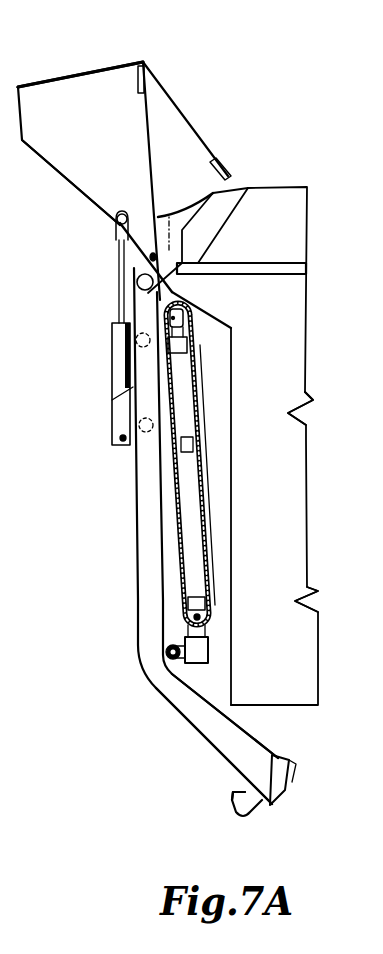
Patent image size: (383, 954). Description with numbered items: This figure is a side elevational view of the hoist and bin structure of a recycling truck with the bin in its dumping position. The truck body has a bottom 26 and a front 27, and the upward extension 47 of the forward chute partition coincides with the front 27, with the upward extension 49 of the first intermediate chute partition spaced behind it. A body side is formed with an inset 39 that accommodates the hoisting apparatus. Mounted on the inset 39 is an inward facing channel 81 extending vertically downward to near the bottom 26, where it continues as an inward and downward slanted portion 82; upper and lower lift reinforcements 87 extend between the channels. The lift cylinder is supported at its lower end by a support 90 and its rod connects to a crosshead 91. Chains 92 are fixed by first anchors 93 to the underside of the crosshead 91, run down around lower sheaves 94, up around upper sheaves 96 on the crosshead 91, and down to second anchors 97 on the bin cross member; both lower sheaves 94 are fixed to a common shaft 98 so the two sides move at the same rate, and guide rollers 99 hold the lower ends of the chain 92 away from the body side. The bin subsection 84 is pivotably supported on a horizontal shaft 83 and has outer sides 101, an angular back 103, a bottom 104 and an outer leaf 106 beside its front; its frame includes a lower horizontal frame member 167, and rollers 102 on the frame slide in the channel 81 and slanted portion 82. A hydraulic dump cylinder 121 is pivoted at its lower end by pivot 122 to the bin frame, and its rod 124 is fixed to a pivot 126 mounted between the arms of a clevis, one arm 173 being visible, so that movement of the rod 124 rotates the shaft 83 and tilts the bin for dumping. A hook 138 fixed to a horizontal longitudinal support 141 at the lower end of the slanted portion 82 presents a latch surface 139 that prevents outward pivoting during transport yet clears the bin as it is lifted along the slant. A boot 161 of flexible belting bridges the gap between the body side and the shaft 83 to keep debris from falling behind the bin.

The bottom 26 is at (257, 705).
The front 27 is at (295, 597).
The inset 39 is at (288, 411).
The upward extension 47 is at (287, 203).
The upward extension 49 is at (230, 203).
The inward facing channel 81 is at (143, 540).
The inward/downward slanted portion 82 is at (197, 727).
The horizontal shaft 83 is at (137, 287).
The bin subsection 84 is at (59, 70).
The longitudinal lift reinforcement 87 is at (210, 653).
The support 90 is at (195, 597).
The crosshead 91 is at (187, 340).
The chain 92 is at (195, 382).
The first anchor 93 is at (198, 367).
The lower sheave 94 is at (213, 622).
The upper sheave 96 is at (187, 303).
The second anchor 97 is at (153, 317).
The longitudinal horizontal shaft 98 is at (212, 610).
The guide roller 99 is at (123, 653).
The outer side 101 is at (97, 128).
The roller 102 is at (145, 418).
The angular back 103 is at (45, 166).
The bottom 104 is at (82, 72).
The outer leaf 106 is at (185, 123).
The hydraulic dump cylinder 121 is at (123, 365).
The pivot 122 is at (121, 438).
The rod 124 is at (123, 272).
The pivot 126 is at (115, 227).
The hook 138 is at (245, 833).
The latch surface 139 is at (233, 788).
The horizontal longitudinal support 141 is at (292, 764).
The boot 161 is at (169, 214).
The lower horizontal longitudinal frame member 167 is at (136, 338).
The clevis arm 173 is at (135, 232).